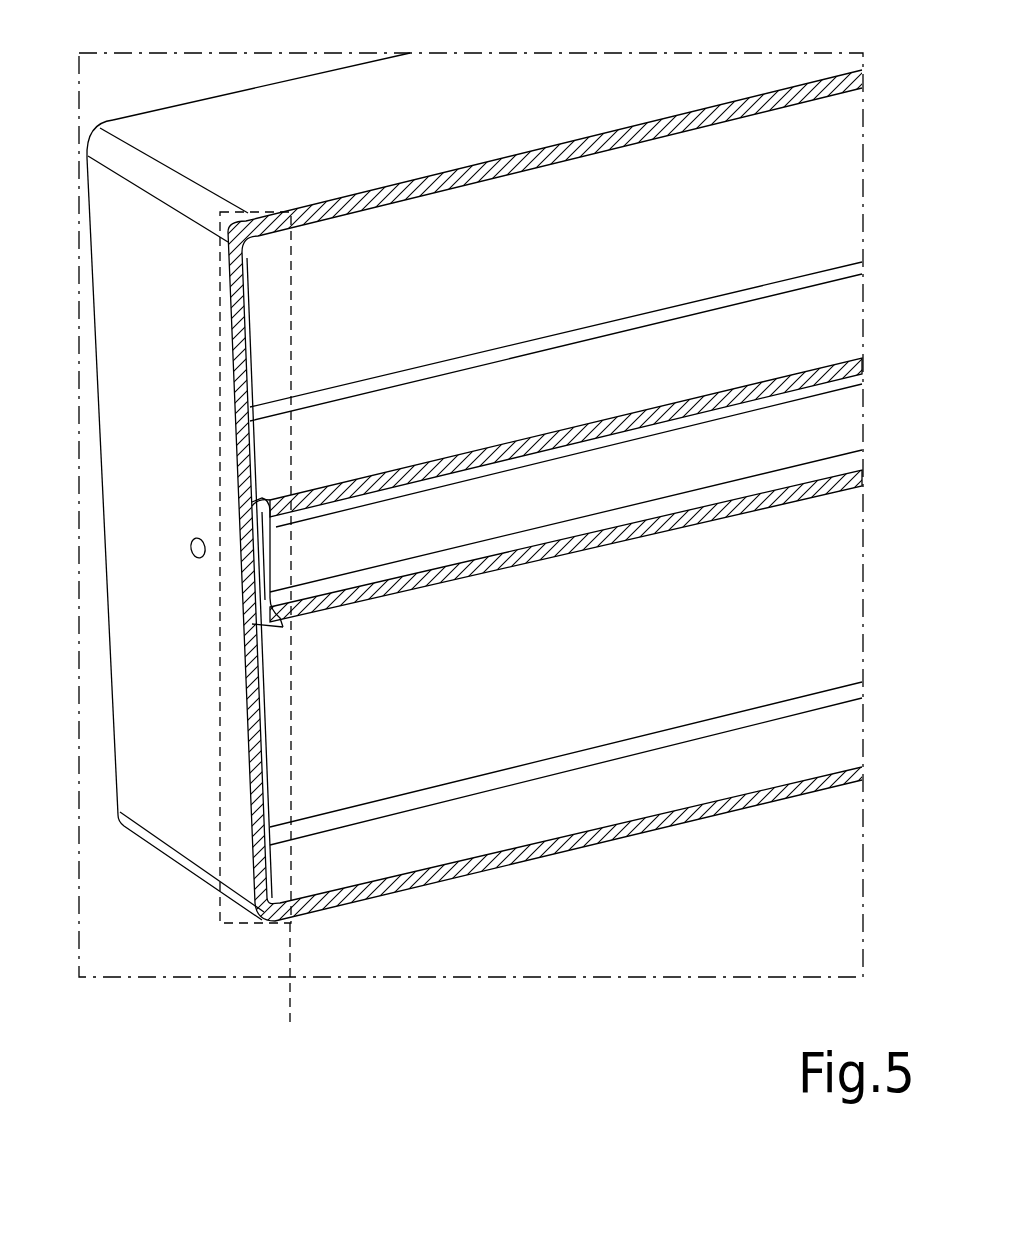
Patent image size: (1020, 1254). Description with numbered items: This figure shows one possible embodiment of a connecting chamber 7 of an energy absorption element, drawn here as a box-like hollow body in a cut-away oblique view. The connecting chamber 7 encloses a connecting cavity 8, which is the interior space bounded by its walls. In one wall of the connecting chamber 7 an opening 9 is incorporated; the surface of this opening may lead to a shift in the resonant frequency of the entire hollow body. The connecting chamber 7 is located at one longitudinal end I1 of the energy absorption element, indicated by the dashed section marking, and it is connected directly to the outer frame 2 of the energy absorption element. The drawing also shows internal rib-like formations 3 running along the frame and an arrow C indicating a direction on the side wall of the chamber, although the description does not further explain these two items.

The outer frame 2 is at (474, 102).
The ribs 3 is at (680, 363).
The connecting chamber 7 is at (145, 330).
The connecting cavity 8 is at (203, 883).
The opening 9 is at (172, 548).
The direction C is at (140, 439).
The longitudinal end I1 is at (259, 635).